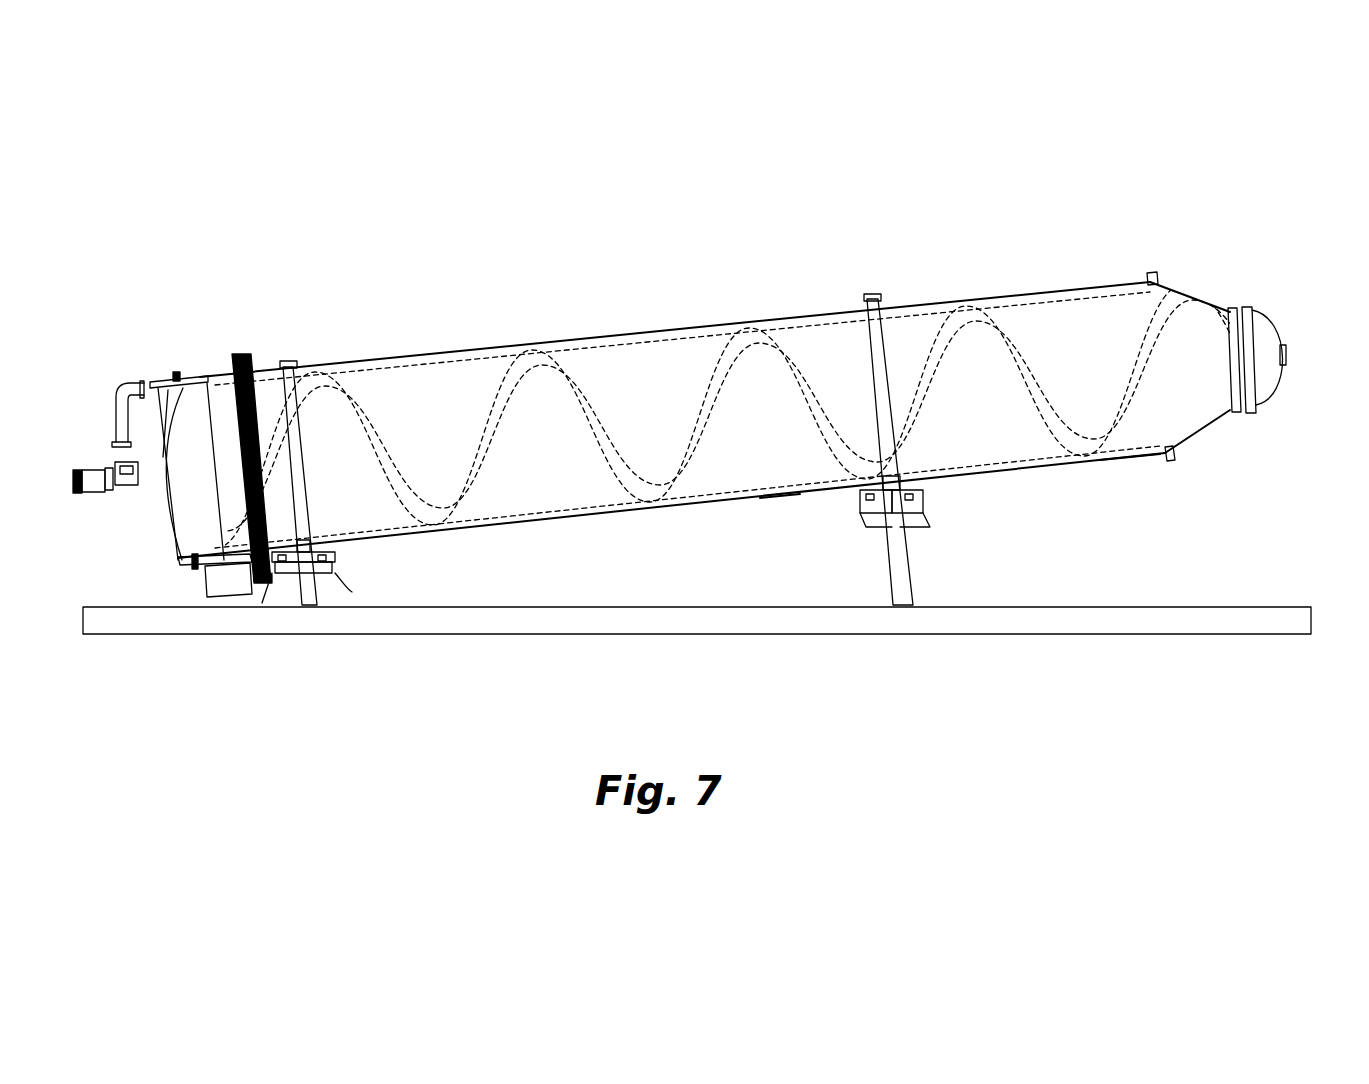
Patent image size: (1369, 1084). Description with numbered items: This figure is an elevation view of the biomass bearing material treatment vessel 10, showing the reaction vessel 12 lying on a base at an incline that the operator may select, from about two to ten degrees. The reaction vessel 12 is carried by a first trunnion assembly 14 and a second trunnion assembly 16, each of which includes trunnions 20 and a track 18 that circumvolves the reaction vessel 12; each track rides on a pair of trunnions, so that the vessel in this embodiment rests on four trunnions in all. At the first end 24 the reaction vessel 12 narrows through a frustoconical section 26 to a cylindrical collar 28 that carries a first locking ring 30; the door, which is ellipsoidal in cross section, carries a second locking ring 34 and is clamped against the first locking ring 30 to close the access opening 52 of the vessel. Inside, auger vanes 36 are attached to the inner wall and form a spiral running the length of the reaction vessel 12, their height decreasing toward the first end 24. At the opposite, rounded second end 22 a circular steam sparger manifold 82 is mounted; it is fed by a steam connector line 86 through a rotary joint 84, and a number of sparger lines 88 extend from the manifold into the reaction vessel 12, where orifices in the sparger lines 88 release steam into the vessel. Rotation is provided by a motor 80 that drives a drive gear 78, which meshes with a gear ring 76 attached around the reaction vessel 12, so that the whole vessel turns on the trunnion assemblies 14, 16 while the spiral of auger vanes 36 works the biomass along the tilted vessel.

The biomass bearing material treatment vessel 10 is at (190, 352).
The reaction vessel 12 is at (590, 523).
The first trunnion assembly 14 is at (913, 520).
The second trunnion assembly 16 is at (327, 577).
The track 18 is at (298, 437).
The trunnion 20 is at (880, 522).
The second end 22 is at (203, 530).
The first end 24 is at (1127, 467).
The frustoconical section 26 is at (1183, 440).
The cylindrical collar 28 is at (1235, 307).
The first locking ring 30 is at (1245, 307).
The second locking ring 34 is at (1253, 407).
The auger vanes 36 is at (680, 480).
The access opening 52 is at (1283, 352).
The gear ring 76 is at (240, 478).
The drive gear 78 is at (268, 585).
The motor 80 is at (235, 587).
The steam sparger manifold 82 is at (170, 522).
The rotary joint 84 is at (90, 497).
The steam connector line 86 is at (115, 418).
The sparger lines 88 is at (198, 568).